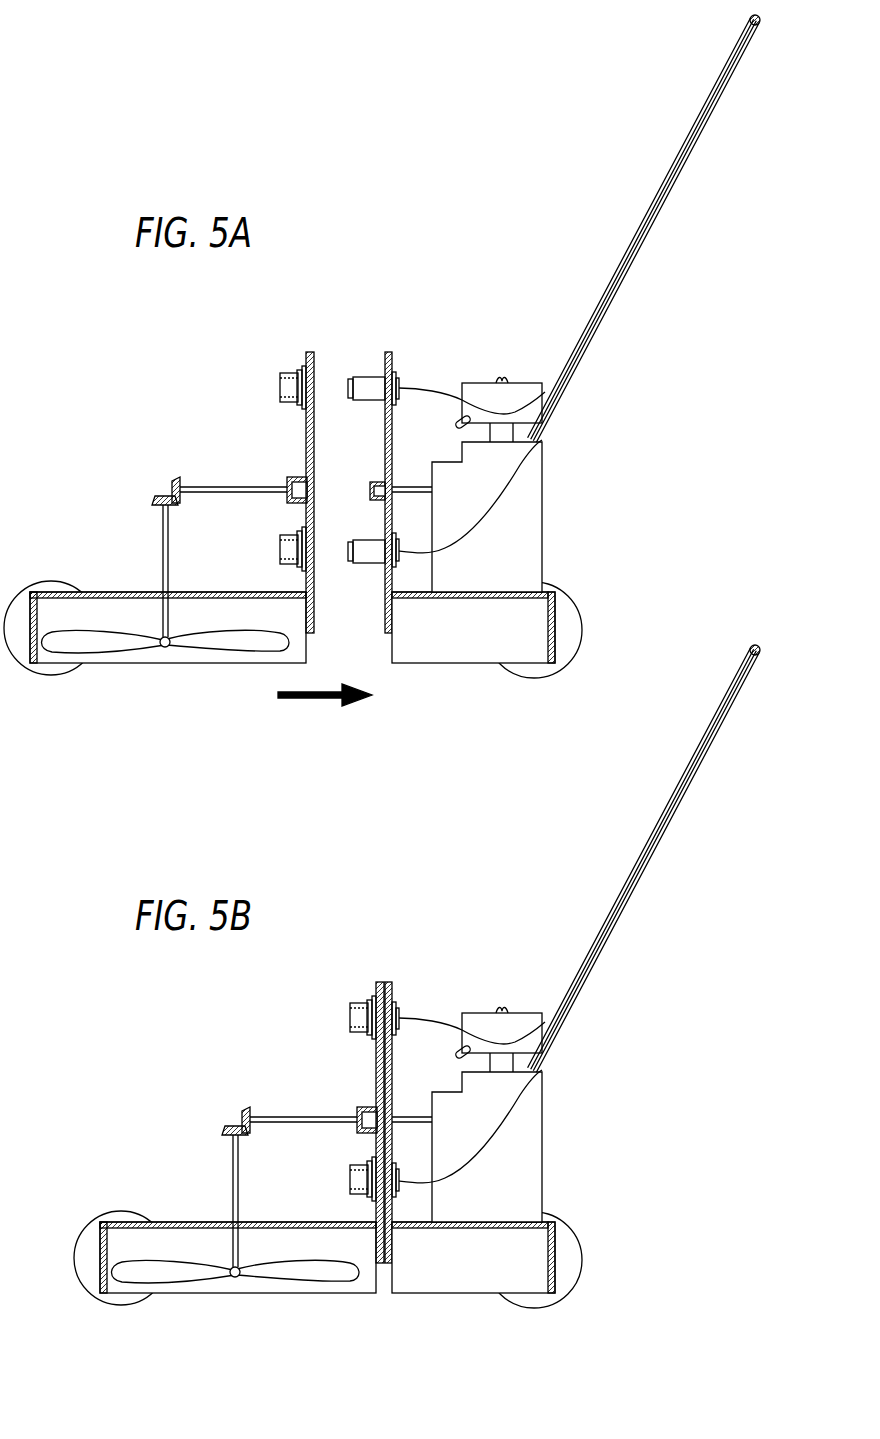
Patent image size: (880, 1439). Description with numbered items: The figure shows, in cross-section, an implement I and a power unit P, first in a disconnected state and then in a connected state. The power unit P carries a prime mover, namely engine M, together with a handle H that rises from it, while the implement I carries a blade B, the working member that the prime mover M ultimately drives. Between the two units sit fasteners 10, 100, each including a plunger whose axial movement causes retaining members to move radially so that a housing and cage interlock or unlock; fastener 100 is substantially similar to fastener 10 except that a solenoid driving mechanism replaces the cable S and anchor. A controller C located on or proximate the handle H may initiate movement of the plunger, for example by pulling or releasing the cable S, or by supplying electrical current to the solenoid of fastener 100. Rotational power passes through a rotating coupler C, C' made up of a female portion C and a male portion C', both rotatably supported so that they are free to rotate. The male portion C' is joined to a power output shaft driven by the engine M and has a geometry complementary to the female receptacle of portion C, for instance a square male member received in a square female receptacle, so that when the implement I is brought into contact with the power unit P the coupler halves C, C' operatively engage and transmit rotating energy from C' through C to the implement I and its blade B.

In FIG. 5A, the implement I is at (159, 536).
In FIG. 5B, the implement I is at (229, 1165).
In FIG. 5A, the blade B is at (114, 643).
In FIG. 5B, the blade B is at (180, 1273).
In FIG. 5A, the controller / female coupler portion C is at (283, 463).
In FIG. 5B, the controller / female coupler portion C is at (767, 643).
In FIG. 5A, the male coupler portion C' is at (364, 465).
In FIG. 5A, the fastener 10 is at (323, 438).
In FIG. 5B, the fastener 10 is at (346, 1068).
In FIG. 5A, the fastener 100 is at (341, 521).
In FIG. 5B, the fastener 100 is at (341, 1150).
In FIG. 5A, the cable S is at (413, 552).
In FIG. 5B, the cable S is at (413, 1182).
In FIG. 5A, the prime mover / engine M is at (540, 519).
In FIG. 5B, the prime mover / engine M is at (532, 1148).
In FIG. 5A, the handle H is at (653, 228).
In FIG. 5B, the handle H is at (653, 858).
In FIG. 5A, the power unit P is at (564, 339).
In FIG. 5B, the power unit P is at (585, 969).